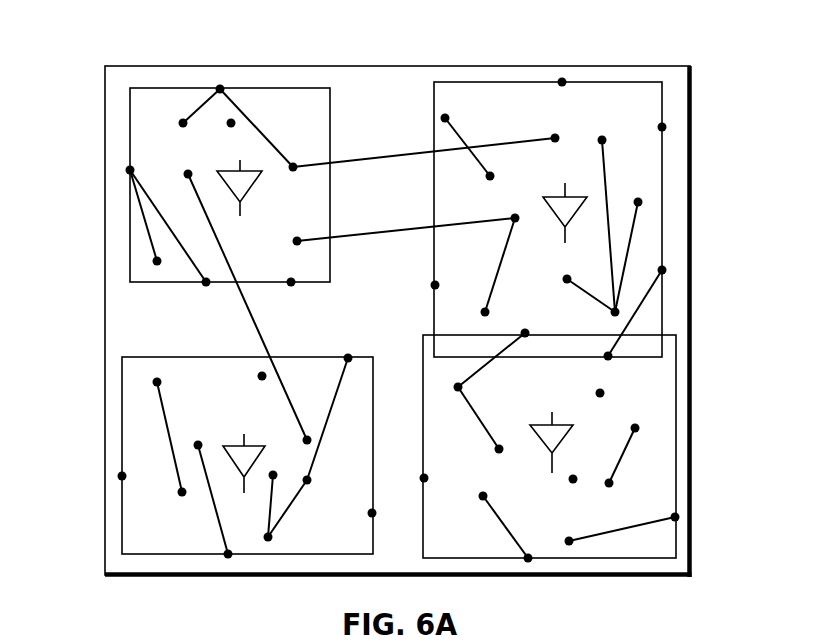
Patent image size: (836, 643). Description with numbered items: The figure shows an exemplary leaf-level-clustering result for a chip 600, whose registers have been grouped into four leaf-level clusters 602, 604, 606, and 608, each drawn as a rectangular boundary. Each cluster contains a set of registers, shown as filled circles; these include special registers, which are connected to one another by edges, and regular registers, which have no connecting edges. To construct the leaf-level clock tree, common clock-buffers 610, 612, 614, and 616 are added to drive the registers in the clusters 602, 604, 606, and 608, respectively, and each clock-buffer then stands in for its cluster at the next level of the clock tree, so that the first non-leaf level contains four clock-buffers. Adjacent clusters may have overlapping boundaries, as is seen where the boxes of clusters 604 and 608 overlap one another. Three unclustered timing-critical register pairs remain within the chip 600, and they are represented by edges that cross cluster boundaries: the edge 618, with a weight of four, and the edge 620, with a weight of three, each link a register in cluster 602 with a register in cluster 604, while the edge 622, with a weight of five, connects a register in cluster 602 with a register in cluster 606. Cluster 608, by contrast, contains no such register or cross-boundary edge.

The chip 600 is at (105, 66).
The leaf-level cluster 602 is at (130, 282).
The leaf-level cluster 604 is at (662, 82).
The leaf-level cluster 606 is at (122, 554).
The leaf-level cluster 608 is at (676, 386).
The clock-buffer 610 is at (248, 192).
The clock-buffer 612 is at (565, 225).
The clock-buffer 614 is at (244, 475).
The clock-buffer 616 is at (551, 469).
The edge 618 is at (342, 160).
The edge 620 is at (340, 237).
The edge 622 is at (262, 333).